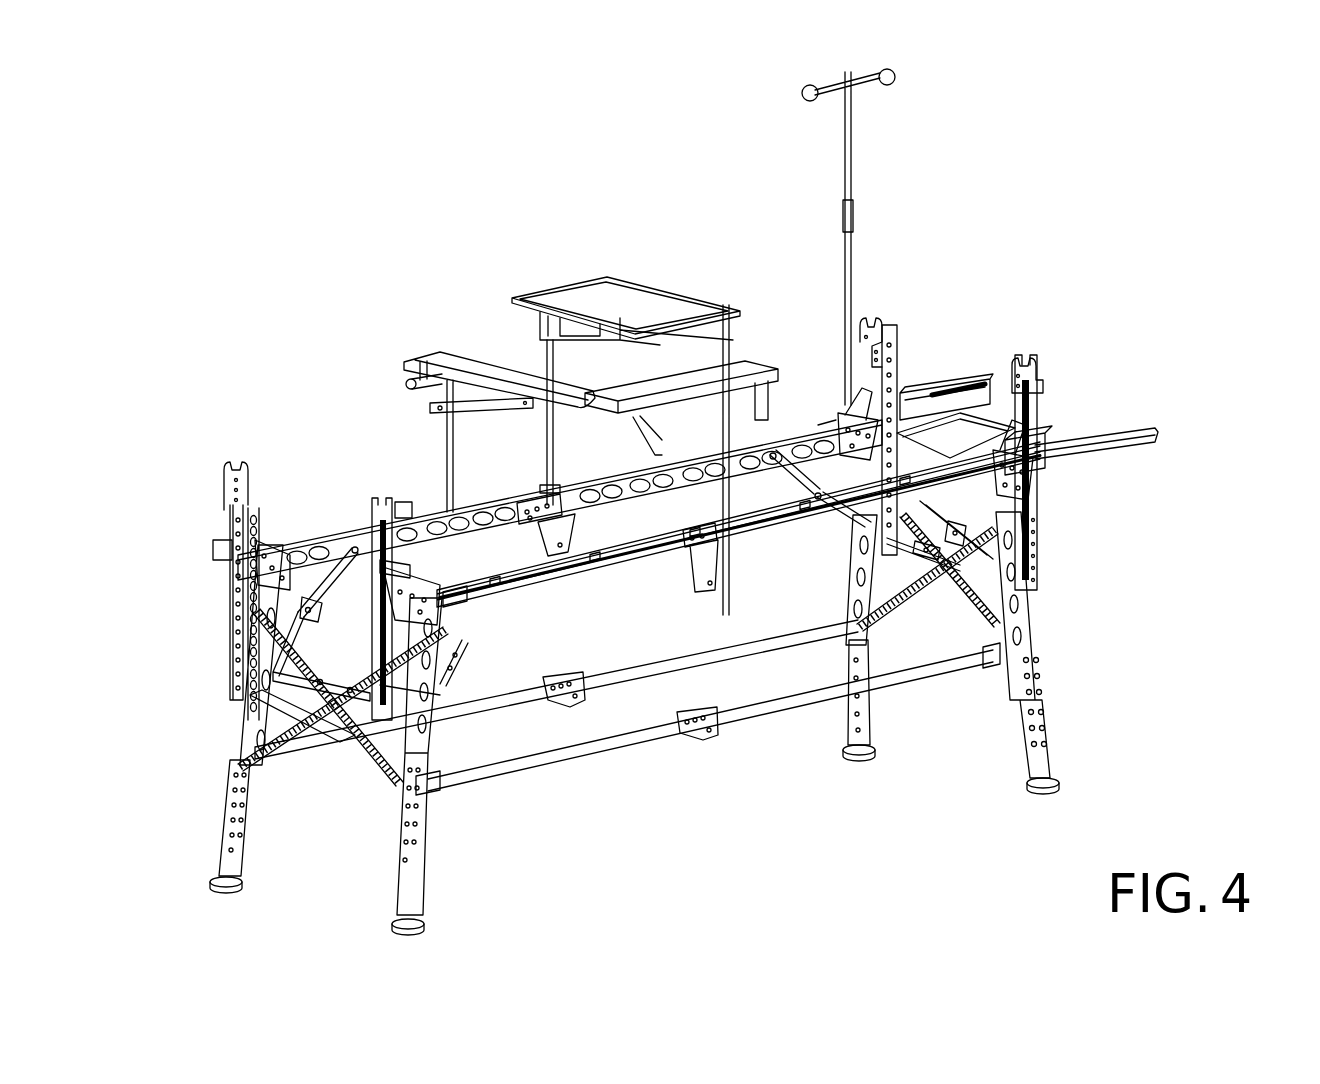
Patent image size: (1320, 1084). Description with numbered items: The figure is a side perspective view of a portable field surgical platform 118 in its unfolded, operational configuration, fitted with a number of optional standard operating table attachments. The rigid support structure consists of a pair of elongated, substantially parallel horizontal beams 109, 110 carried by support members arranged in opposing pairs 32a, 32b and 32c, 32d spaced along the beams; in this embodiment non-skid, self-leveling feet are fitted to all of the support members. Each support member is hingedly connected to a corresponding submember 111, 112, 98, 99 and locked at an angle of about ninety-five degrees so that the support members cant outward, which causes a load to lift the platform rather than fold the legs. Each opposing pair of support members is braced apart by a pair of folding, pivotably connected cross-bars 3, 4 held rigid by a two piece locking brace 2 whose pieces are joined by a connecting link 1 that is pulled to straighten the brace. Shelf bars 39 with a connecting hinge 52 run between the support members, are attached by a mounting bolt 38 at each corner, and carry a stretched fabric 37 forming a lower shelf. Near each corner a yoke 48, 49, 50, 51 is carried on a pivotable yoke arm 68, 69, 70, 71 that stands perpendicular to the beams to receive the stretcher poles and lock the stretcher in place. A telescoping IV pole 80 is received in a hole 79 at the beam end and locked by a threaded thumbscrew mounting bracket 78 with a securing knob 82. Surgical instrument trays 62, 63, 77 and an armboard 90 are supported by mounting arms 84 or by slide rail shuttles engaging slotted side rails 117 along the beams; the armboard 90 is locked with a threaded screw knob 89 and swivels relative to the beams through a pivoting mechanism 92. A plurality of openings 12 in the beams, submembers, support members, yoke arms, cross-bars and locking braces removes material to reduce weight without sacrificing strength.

The portable field surgical platform 118 is at (510, 203).
The openings 12 is at (470, 530).
The submember 112 is at (597, 575).
The fabric 37 is at (520, 690).
The shelf bars 39 is at (577, 755).
The mounting bolt 38 is at (424, 790).
The connecting link or hinge 52 is at (563, 678).
The support member 32a is at (872, 742).
The support member 32b is at (1040, 738).
The support member 32c is at (250, 738).
The support member 32d is at (422, 882).
The yoke arm 69 is at (252, 462).
The yoke 49 is at (224, 480).
The horizontal beam 110 is at (300, 545).
The yoke 48 is at (380, 505).
The submember 99 is at (432, 498).
The yoke arm 68 is at (900, 372).
The yoke 50 is at (895, 318).
The yoke arm 70 is at (1045, 552).
The yoke 51 is at (1040, 372).
The surgical instrument tray 77 is at (1003, 420).
The threaded thumbscrew mounting bracket 78 is at (1040, 436).
The securing knob 82 is at (1080, 442).
The horizontal beam 109 is at (1032, 510).
The hole 79 is at (845, 410).
The submember 98 is at (822, 410).
The telescoping IV pole 80 is at (852, 122).
The mounting arms 84 is at (852, 238).
The surgical instrument tray 63 is at (562, 266).
The folding equipment tray 62 is at (712, 360).
The armboard 90 is at (438, 359).
The pivoting mechanism 92 is at (410, 385).
The threaded screw knob 89 is at (438, 503).
The connecting link 1 is at (296, 640).
The two piece locking brace 2 is at (328, 678).
The cross-bar 3 is at (385, 790).
The cross-bar 4 is at (255, 772).
The yoke arm 71 is at (350, 740).
The slotted side rails 117 is at (783, 540).
The submember 111 is at (822, 532).